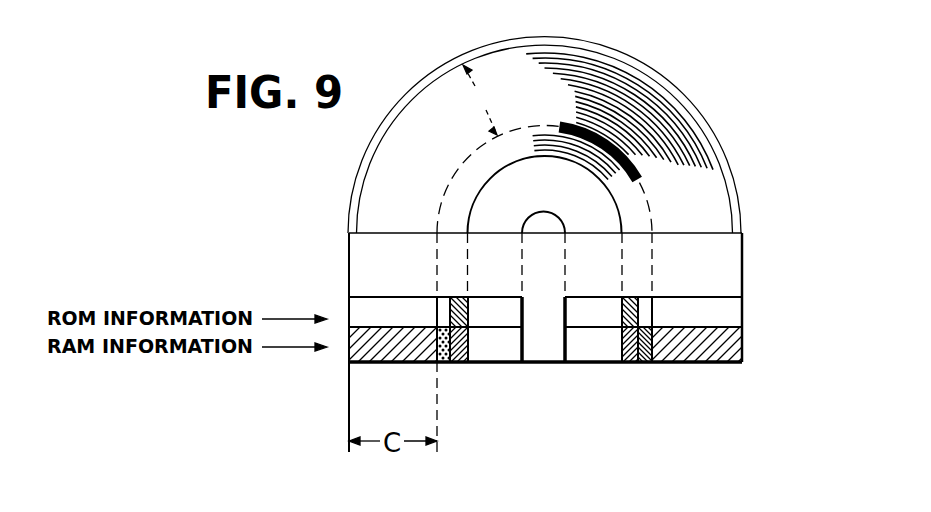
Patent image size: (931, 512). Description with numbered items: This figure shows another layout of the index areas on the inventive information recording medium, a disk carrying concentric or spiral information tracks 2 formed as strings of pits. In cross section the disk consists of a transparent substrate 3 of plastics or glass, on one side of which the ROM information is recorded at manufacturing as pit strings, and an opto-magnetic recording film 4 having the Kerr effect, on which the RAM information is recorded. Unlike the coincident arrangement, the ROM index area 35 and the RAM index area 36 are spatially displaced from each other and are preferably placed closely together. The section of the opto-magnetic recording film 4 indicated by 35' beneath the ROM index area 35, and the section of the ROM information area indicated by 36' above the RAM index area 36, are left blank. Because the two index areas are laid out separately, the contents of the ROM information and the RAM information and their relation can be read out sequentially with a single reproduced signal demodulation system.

The information tracks 2 is at (668, 108).
The transparent substrate 3 is at (725, 315).
The opto-magnetic recording film 4 is at (730, 348).
The ROM index area 35 is at (544, 291).
The blank section of opto-magnetic recording film 35' is at (544, 370).
The RAM index area 36 is at (551, 376).
The blank section of ROM information area 36' is at (544, 309).